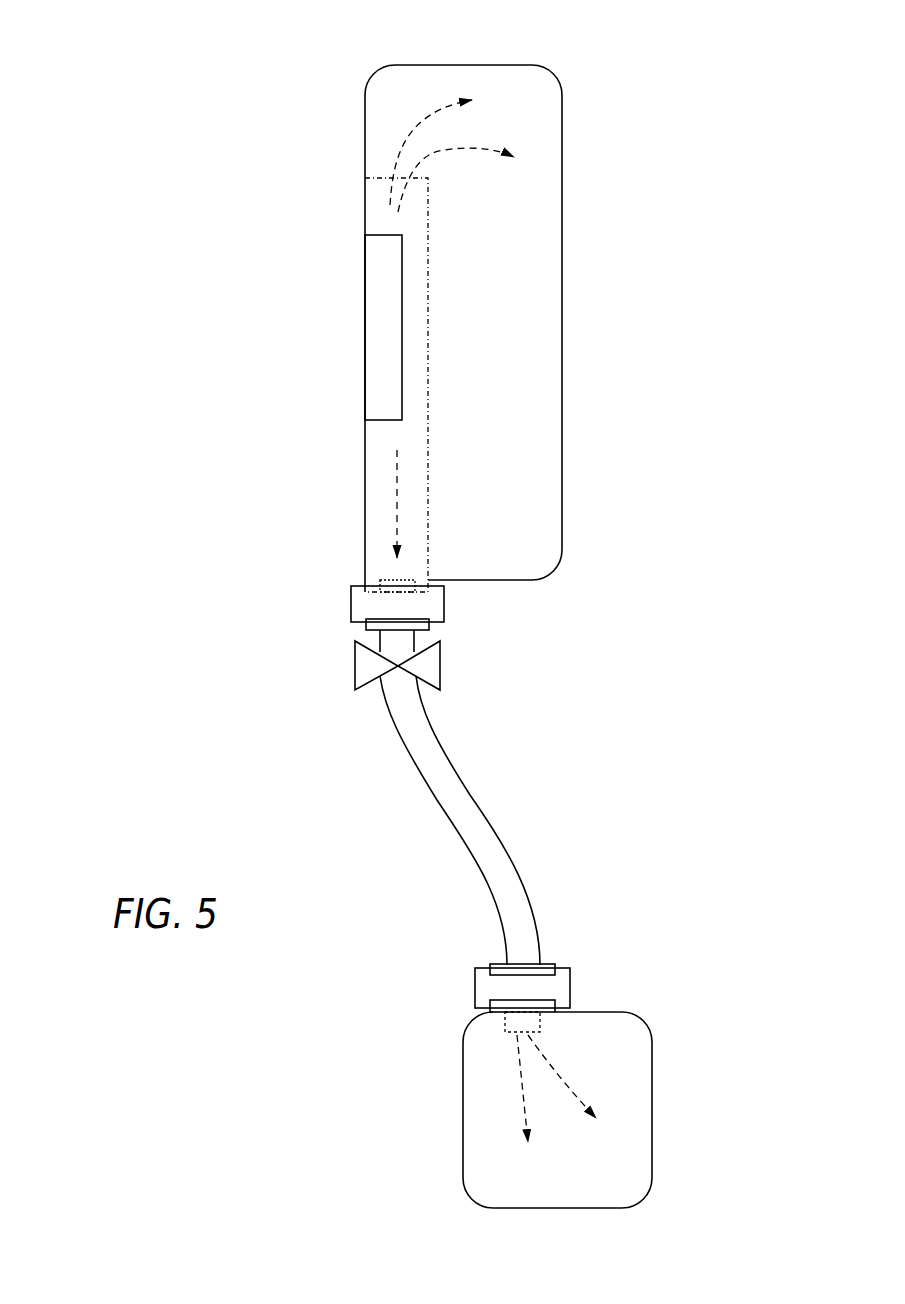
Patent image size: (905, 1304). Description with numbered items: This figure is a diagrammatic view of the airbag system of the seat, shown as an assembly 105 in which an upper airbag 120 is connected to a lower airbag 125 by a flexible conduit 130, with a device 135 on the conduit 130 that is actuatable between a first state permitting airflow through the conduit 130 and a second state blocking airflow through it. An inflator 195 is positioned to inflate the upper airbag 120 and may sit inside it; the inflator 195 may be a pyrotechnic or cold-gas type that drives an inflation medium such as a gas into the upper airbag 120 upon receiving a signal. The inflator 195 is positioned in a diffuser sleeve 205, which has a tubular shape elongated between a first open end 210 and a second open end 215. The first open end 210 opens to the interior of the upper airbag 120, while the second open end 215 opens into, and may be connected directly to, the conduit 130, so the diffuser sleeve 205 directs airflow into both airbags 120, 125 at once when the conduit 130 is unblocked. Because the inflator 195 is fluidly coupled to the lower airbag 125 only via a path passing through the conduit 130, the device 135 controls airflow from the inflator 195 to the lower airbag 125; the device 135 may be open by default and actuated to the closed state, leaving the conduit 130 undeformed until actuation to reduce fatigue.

The assembly 105 is at (192, 111).
The upper airbag 120 is at (562, 212).
The lower airbag 125 is at (652, 1078).
The flexible conduit 130 is at (477, 792).
The device 135 is at (441, 665).
The inflator 195 is at (365, 307).
The diffuser sleeve 205 is at (430, 405).
The first open end 210 is at (387, 215).
The second open end 215 is at (378, 592).